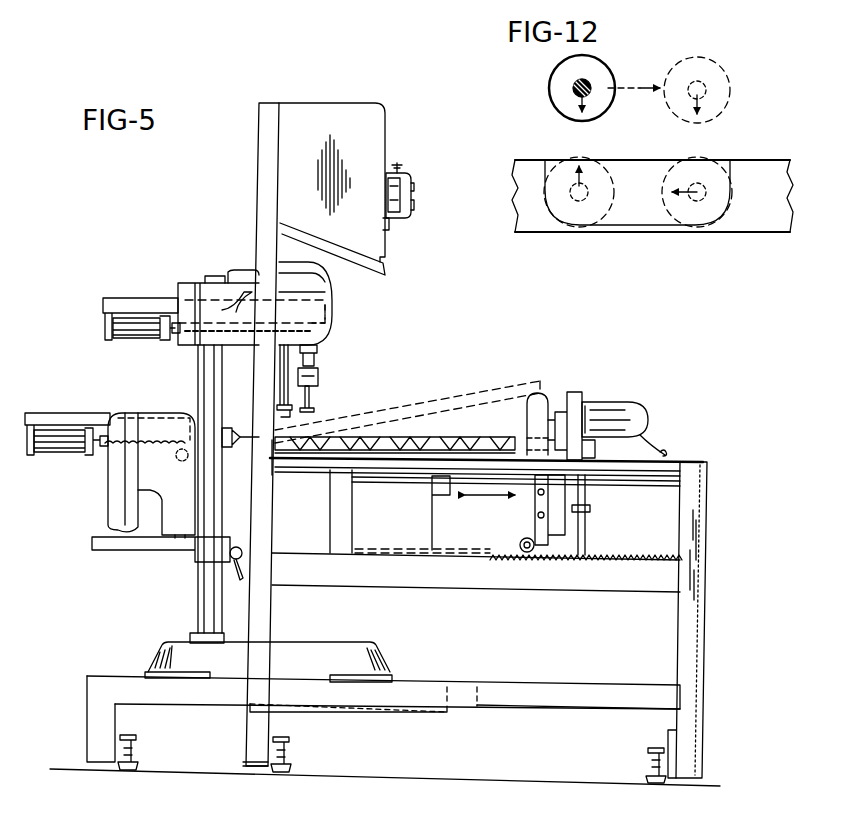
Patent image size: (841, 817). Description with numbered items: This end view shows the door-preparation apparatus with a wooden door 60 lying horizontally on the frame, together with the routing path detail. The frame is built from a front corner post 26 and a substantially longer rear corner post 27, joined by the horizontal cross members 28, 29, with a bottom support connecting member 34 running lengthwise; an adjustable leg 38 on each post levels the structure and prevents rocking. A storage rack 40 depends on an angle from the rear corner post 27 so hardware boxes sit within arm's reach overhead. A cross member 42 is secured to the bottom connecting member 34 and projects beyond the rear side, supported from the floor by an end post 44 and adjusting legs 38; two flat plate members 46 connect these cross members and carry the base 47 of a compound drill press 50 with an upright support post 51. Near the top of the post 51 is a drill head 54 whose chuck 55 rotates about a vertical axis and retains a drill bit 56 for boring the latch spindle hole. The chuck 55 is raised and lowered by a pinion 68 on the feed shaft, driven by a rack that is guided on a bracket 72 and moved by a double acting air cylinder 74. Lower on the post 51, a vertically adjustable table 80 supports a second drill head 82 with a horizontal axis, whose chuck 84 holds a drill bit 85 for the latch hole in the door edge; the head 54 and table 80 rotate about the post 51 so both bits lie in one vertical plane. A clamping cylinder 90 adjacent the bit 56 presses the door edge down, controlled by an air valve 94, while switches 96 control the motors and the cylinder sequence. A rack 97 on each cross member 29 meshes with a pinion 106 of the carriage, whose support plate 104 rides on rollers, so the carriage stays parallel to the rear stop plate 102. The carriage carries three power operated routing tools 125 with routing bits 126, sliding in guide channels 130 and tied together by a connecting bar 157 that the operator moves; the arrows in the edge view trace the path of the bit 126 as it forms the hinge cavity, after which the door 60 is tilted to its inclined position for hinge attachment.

In FIG. 5, the front corner post 26 is at (698, 630).
In FIG. 5, the rear corner post 27 is at (263, 172).
In FIG. 5, the cross member 28 is at (548, 706).
In FIG. 5, the horizontal cross member 29 is at (565, 583).
In FIG. 5, the bottom support connecting member 34 is at (462, 712).
In FIG. 5, the adjustable leg 38 is at (133, 776).
In FIG. 5, the storage rack 40 is at (385, 270).
In FIG. 5, the cross member 42 is at (95, 675).
In FIG. 5, the end post 44 is at (87, 718).
In FIG. 5, the flat plate member 46 is at (148, 674).
In FIG. 5, the base 47 is at (336, 641).
In FIG. 5, the compound drill press 50 is at (170, 284).
In FIG. 5, the upright support post 51 is at (202, 372).
In FIG. 5, the drill head 54 is at (333, 306).
In FIG. 5, the drill chuck 55 is at (320, 380).
In FIG. 5, the drill bit 56 is at (320, 410).
In FIG. 5, the wooden door 60 is at (452, 437).
In FIG. 12, the wooden door 60 is at (745, 228).
In FIG. 5, the pinion 68 is at (175, 458).
In FIG. 5, the bracket 72 is at (330, 320).
In FIG. 5, the double acting air cylinder 74 is at (130, 341).
In FIG. 5, the vertically adjustable table 80 is at (133, 551).
In FIG. 5, the drill head 82 is at (162, 414).
In FIG. 5, the drill chuck 84 is at (228, 432).
In FIG. 5, the drill bit 85 is at (272, 478).
In FIG. 5, the clamping cylinder 90 is at (276, 388).
In FIG. 5, the air valve 94 is at (398, 168).
In FIG. 5, the switch 96 is at (408, 222).
In FIG. 5, the rack 97 is at (627, 565).
In FIG. 5, the rear stop plate 102 is at (280, 477).
In FIG. 5, the support plate 104 is at (452, 540).
In FIG. 5, the pinion 106 is at (520, 543).
In FIG. 5, the power operated routing tool 125 is at (646, 414).
In FIG. 5, the routing bit 126 is at (552, 412).
In FIG. 12, the routing bit 126 is at (548, 87).
In FIG. 5, the guide channel 130 is at (570, 490).
In FIG. 5, the connecting bar 157 is at (590, 440).